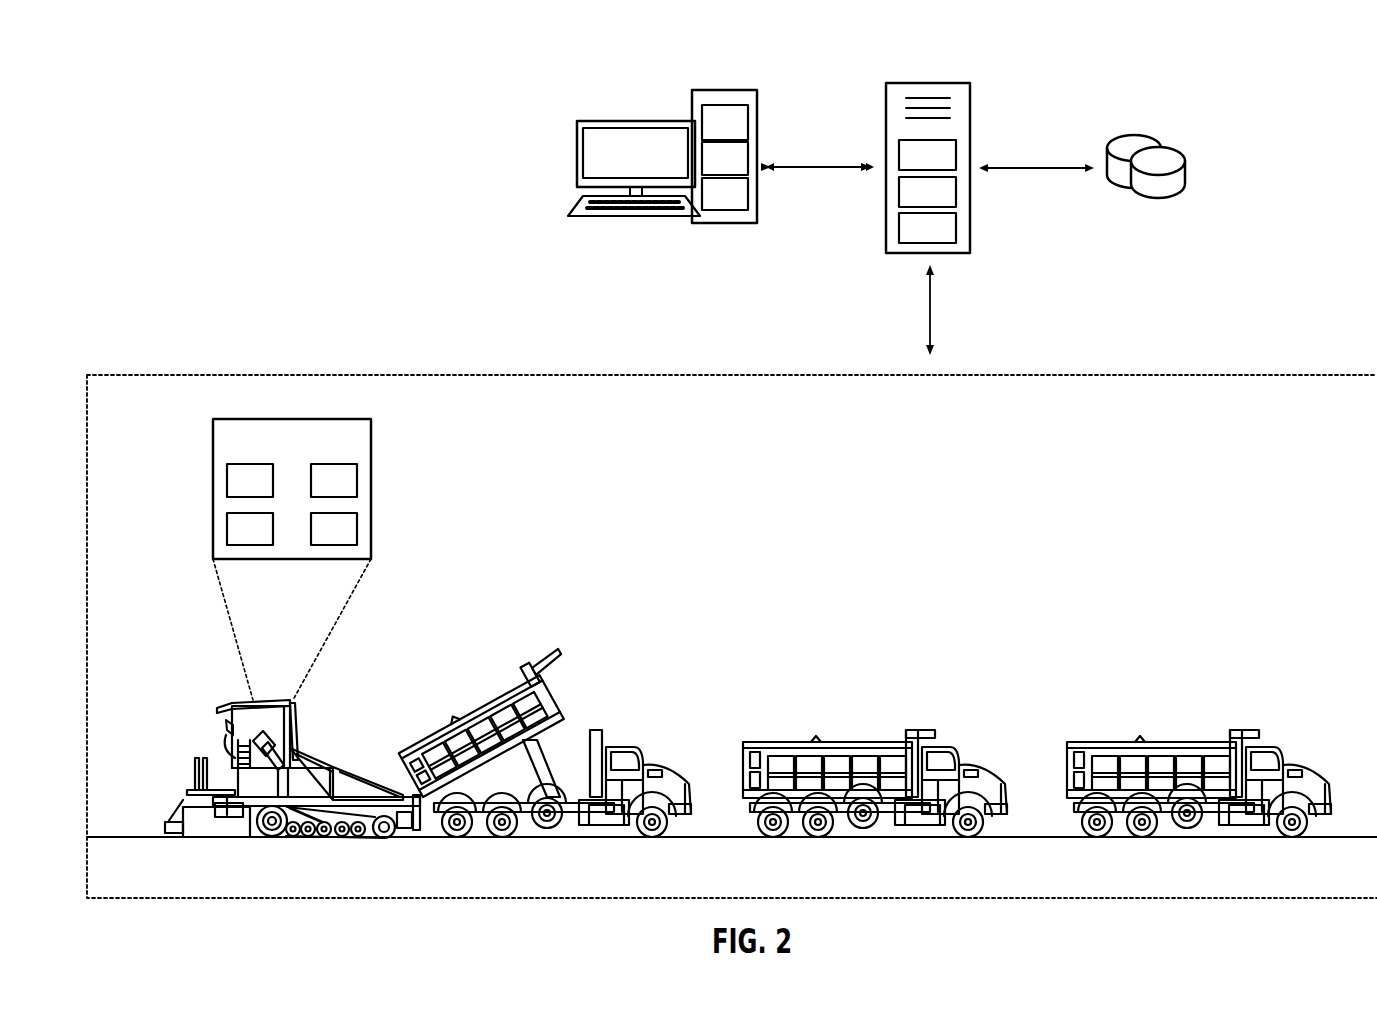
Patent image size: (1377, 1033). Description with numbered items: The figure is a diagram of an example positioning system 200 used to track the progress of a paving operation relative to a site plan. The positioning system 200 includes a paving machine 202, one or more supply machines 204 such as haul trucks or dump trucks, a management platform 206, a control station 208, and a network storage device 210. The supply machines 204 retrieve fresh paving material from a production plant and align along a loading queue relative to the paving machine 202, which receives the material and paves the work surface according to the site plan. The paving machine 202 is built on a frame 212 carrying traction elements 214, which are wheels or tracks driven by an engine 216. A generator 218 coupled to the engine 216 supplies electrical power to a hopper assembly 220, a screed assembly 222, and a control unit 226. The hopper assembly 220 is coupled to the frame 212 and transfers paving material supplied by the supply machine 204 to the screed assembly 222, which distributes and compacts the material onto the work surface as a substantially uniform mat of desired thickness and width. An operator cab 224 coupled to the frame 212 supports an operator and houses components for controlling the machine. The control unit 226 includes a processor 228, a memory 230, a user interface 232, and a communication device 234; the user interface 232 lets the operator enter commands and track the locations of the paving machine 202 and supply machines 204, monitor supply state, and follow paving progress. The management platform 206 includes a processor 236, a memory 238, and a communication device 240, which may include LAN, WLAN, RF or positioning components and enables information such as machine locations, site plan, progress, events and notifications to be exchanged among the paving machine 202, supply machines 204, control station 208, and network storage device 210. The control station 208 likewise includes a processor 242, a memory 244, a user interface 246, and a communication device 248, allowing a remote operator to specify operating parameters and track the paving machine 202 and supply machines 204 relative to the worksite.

The positioning system 200 is at (190, 88).
The paving machine 202 is at (243, 700).
The supply machine 204 is at (613, 740).
The management platform 206 is at (938, 83).
The control station 208 is at (727, 90).
The network storage device 210 is at (1137, 133).
The frame 212 is at (372, 824).
The traction elements 214 is at (272, 832).
The engine 216 is at (258, 784).
The generator 218 is at (309, 784).
The hopper assembly 220 is at (368, 772).
The screed assembly 222 is at (172, 822).
The operator cab 224 is at (230, 727).
The control unit 226 is at (311, 450).
The processor 228 is at (268, 494).
The memory 230 is at (352, 494).
The user interface 232 is at (268, 542).
The communication device 234 is at (352, 542).
The processor 236 is at (945, 168).
The memory 238 is at (945, 205).
The communication device 240 is at (945, 241).
The processor 242 is at (743, 136).
The memory 244 is at (743, 172).
The user interface 246 is at (561, 130).
The communication device 248 is at (743, 207).